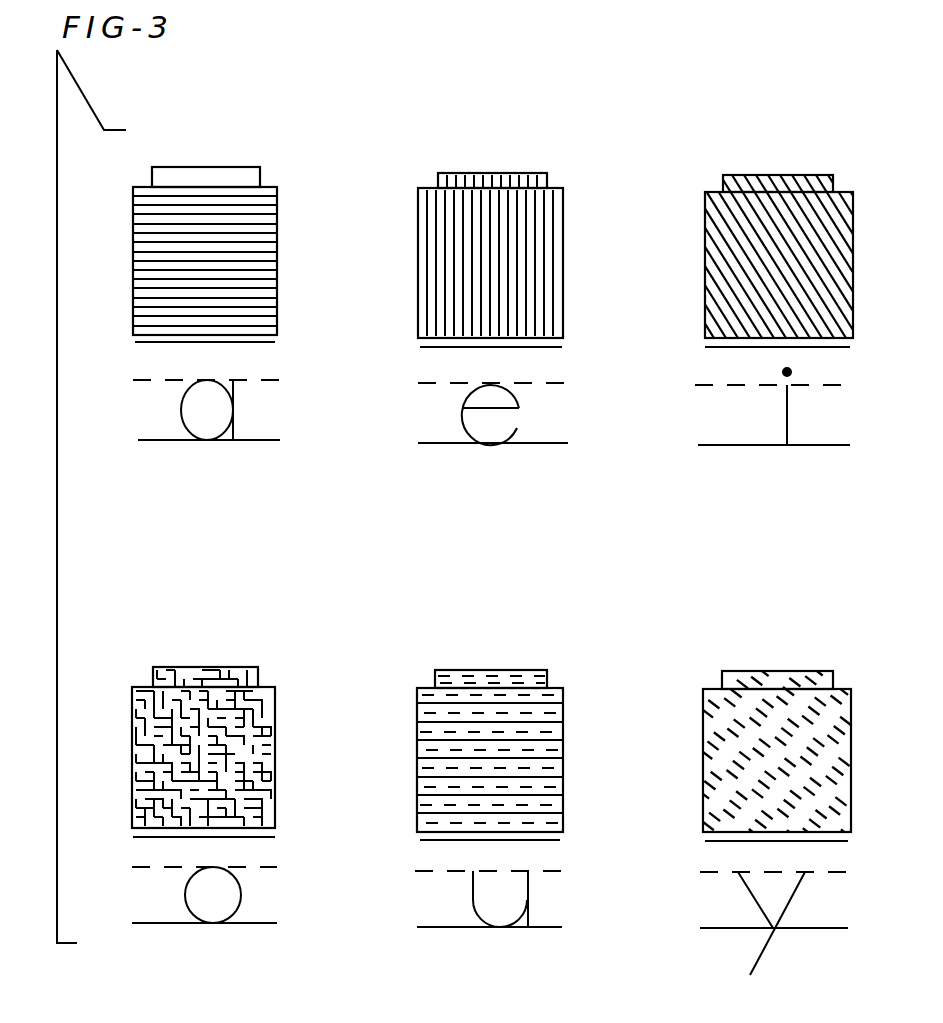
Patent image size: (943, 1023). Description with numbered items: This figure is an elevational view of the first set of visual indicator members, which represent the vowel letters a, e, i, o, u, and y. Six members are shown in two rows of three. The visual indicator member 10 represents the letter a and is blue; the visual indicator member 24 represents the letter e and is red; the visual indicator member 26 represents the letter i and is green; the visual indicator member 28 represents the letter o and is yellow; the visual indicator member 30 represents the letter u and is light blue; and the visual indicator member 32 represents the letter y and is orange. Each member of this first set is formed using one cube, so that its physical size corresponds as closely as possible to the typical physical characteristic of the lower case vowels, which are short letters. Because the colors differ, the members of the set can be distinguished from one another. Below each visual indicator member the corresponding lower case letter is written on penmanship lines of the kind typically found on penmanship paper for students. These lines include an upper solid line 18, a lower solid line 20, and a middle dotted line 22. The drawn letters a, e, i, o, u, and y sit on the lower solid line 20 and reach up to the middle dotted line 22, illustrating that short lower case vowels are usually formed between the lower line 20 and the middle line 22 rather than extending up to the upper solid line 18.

The visual indicator member 10 is at (268, 192).
The upper solid line 18 is at (153, 342).
The lower solid line 20 is at (163, 440).
The middle dotted line 22 is at (160, 380).
The visual indicator member 24 is at (518, 172).
The visual indicator member 26 is at (723, 180).
The visual indicator member 28 is at (237, 667).
The visual indicator member 30 is at (512, 682).
The visual indicator member 32 is at (805, 671).